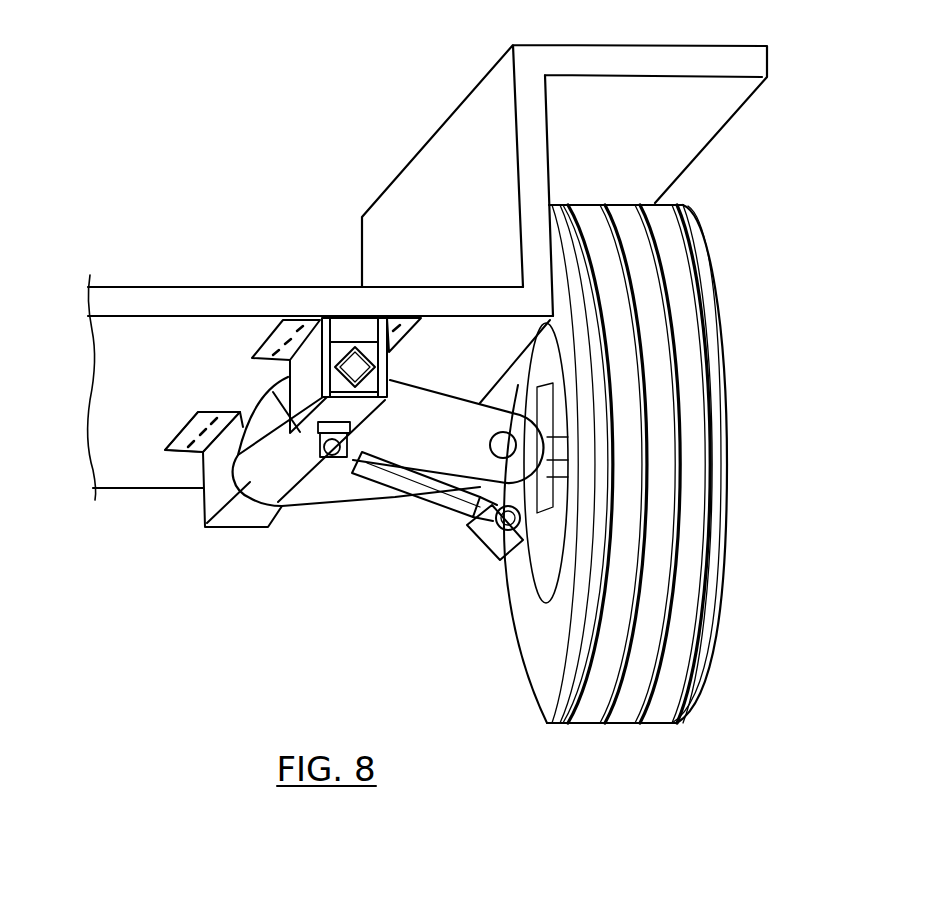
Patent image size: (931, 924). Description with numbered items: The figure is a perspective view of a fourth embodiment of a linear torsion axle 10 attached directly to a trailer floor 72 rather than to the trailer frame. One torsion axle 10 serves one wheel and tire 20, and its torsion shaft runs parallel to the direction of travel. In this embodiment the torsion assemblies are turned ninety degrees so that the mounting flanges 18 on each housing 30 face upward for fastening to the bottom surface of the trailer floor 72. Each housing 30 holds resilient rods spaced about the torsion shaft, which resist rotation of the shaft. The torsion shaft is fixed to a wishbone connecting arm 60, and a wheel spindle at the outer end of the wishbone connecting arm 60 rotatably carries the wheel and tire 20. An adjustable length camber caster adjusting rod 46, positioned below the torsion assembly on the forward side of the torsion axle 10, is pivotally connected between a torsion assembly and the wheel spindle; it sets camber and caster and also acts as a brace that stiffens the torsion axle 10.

The torsion axle 10 is at (367, 580).
The mounting flange 18 is at (181, 456).
The wheel and tire 20 is at (694, 350).
The housing 30 is at (297, 372).
The adjustable length camber caster adjusting rod 46 is at (441, 498).
The wishbone connecting arm 60 is at (452, 447).
The trailer floor 72 is at (230, 295).